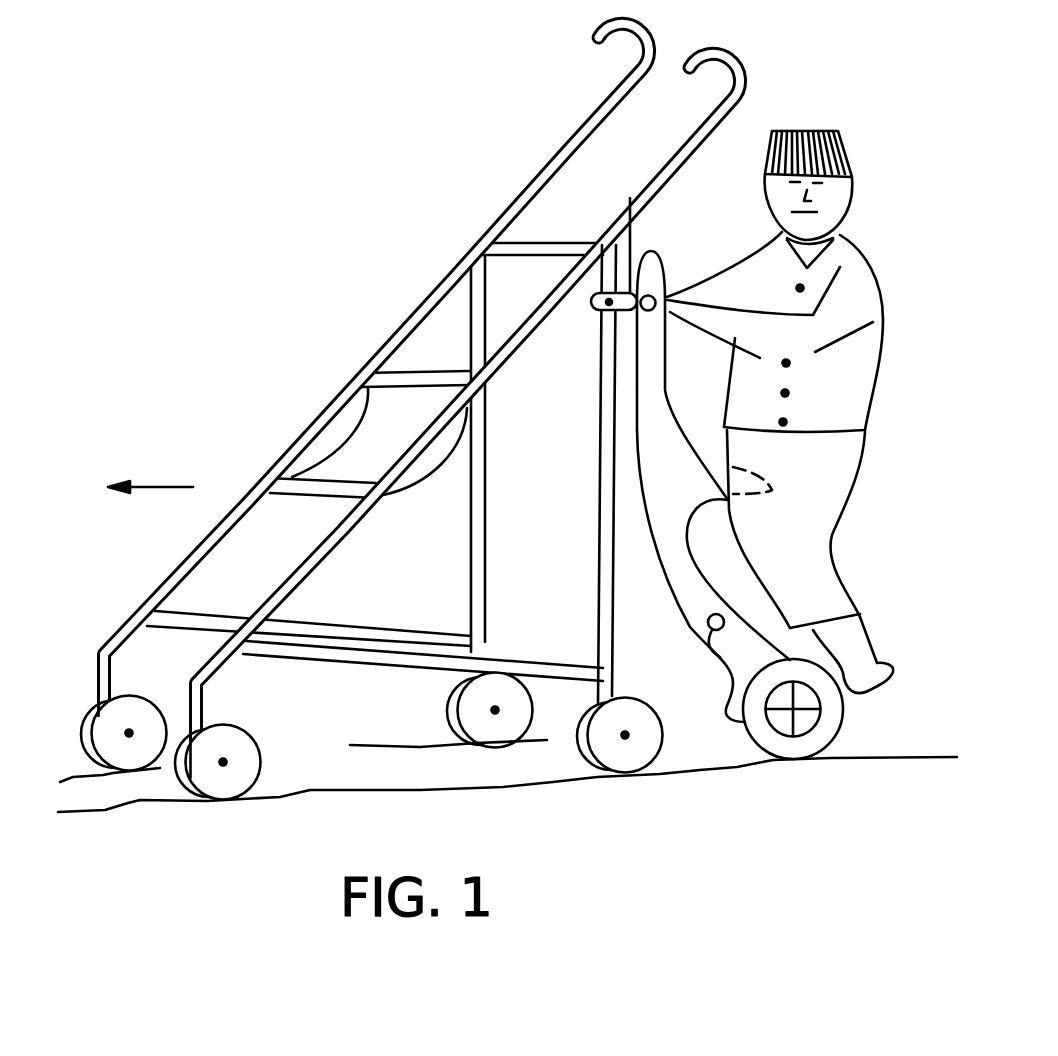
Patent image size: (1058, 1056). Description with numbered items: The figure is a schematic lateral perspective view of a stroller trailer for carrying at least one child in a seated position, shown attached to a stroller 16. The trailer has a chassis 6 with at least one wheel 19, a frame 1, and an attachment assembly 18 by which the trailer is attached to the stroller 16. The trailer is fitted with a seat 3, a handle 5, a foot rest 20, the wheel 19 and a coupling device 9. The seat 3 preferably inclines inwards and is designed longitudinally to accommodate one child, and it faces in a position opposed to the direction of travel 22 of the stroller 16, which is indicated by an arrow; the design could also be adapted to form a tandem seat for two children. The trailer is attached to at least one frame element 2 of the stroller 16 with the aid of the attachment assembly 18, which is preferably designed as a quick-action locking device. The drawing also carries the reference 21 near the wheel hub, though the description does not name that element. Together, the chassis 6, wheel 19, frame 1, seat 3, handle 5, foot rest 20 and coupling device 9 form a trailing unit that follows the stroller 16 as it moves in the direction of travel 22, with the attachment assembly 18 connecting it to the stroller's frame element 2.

The frame 1 is at (668, 498).
The frame element 2 is at (597, 290).
The seat 3 is at (772, 490).
The handle 5 is at (652, 311).
The chassis 6 is at (820, 700).
The coupling device 9 is at (630, 200).
The stroller 16 is at (301, 406).
The attachment assembly 18 is at (590, 307).
The wheel 19 is at (757, 735).
The foot rest 20 is at (710, 636).
The axle hub 21 is at (795, 712).
The direction of travel 22 is at (150, 464).